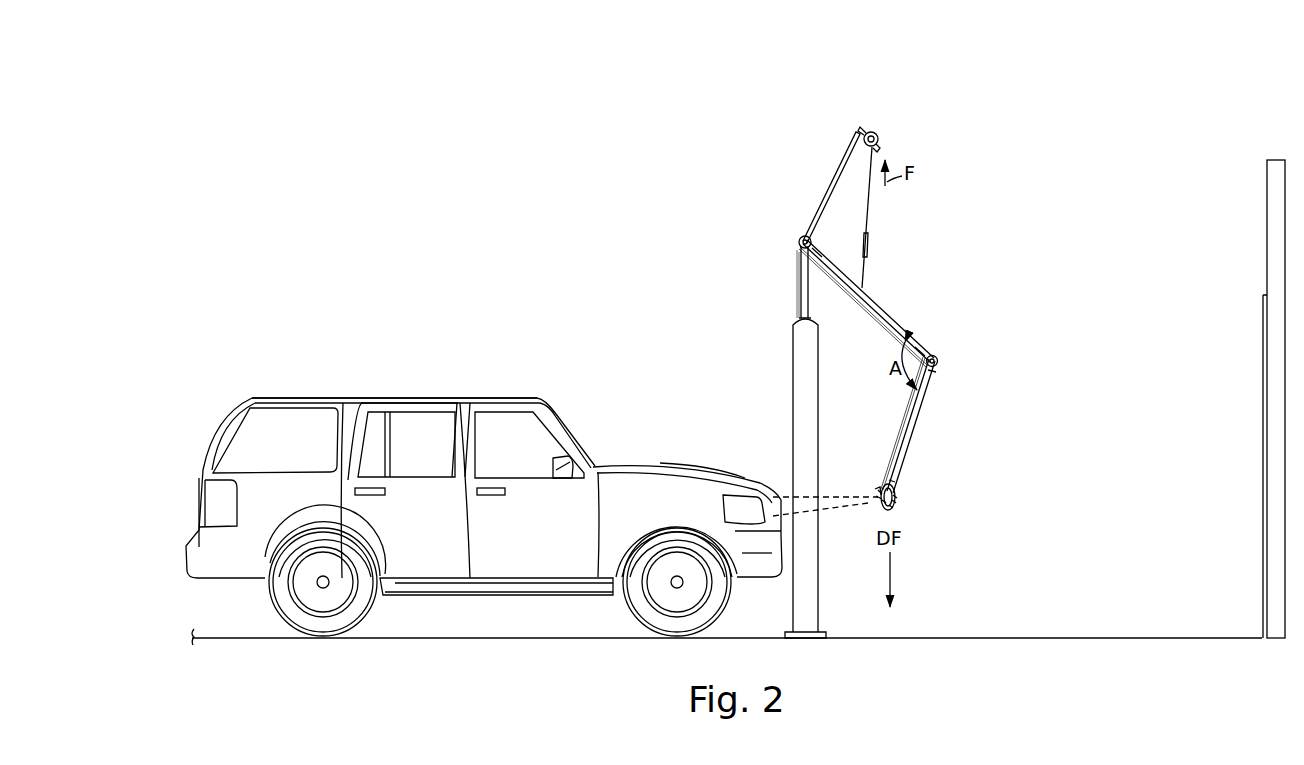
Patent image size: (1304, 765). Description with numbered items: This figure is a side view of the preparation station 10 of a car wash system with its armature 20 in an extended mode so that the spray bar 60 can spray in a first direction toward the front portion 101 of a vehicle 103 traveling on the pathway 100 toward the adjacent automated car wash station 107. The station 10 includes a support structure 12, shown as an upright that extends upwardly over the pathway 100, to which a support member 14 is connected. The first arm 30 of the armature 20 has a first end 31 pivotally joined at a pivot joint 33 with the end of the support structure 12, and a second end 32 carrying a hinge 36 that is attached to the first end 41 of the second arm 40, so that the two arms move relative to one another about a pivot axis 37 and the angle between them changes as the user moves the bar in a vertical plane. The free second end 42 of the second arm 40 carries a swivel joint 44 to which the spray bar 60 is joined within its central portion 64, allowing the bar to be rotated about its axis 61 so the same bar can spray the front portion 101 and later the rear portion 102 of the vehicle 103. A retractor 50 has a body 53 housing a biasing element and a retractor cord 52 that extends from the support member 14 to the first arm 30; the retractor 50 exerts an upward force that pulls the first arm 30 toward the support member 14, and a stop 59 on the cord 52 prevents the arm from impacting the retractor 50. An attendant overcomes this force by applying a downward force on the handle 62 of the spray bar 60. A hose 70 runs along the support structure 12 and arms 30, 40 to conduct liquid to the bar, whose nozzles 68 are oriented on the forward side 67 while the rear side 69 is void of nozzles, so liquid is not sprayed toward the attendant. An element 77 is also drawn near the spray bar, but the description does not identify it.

The preparation station 10 is at (658, 245).
The support structure 12 is at (798, 291).
The support member 14 is at (833, 175).
The armature 20 is at (938, 297).
The first arm 30 is at (884, 298).
The first end 31 is at (826, 253).
The second end 32 is at (922, 348).
The pivot joint 33 is at (800, 240).
The hinge 36 is at (941, 364).
The pivot axis 37 is at (938, 357).
The second arm 40 is at (911, 404).
The first end 41 is at (932, 372).
The second end 42 is at (892, 480).
The swivel joint 44 is at (880, 500).
The retractor 50 is at (880, 135).
The retractor cord 52 is at (873, 201).
The body 53 is at (871, 131).
The stop 59 is at (870, 247).
The spray bar 60 is at (895, 500).
The axis 61 is at (890, 505).
The handle 62 is at (893, 502).
The central portion 64 is at (880, 500).
The forward side 67 is at (867, 611).
The nozzles 68 is at (895, 500).
The rear side 69 is at (924, 611).
The hose 70 is at (880, 316).
The connector end 77 is at (878, 493).
The pathway 100 is at (1114, 637).
The front portion 101 is at (683, 468).
The rear portion 102 is at (220, 438).
The vehicle 103 is at (412, 395).
The automated car wash station 107 is at (1276, 157).